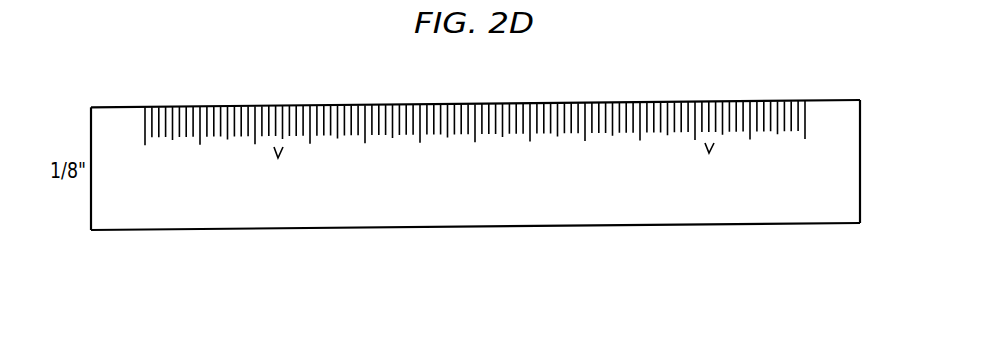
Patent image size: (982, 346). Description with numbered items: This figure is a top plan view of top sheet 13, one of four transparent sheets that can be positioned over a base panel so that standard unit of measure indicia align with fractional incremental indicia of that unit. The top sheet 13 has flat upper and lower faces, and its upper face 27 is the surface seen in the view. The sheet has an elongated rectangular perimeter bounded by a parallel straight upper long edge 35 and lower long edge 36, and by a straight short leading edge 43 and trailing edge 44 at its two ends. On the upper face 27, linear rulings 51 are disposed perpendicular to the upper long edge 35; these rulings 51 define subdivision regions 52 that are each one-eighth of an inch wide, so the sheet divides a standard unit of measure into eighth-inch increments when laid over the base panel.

The top sheet 13 is at (475, 166).
The upper face 27 is at (841, 204).
The upper long edge 35 is at (738, 100).
The lower long edge 36 is at (760, 225).
The leading edge 43 is at (90, 138).
The trailing edge 44 is at (860, 128).
The linear rulings 51 is at (582, 136).
The subdivision regions 52 is at (496, 164).